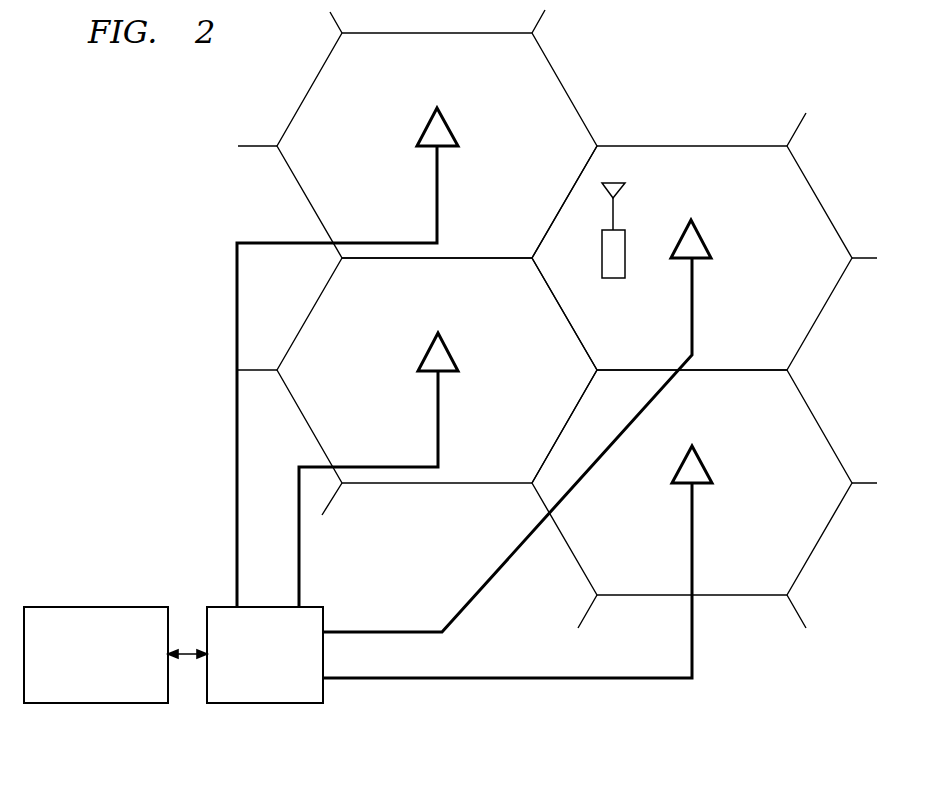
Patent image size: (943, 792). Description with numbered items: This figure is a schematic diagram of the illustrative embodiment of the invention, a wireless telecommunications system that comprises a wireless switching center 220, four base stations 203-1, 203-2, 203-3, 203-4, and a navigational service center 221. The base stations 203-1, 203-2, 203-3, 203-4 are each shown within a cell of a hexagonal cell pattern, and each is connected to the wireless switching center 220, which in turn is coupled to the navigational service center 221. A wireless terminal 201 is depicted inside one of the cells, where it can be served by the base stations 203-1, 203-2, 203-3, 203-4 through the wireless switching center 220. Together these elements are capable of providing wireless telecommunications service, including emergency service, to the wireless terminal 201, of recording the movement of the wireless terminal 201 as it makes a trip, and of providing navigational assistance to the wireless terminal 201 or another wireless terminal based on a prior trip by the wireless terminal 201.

The wireless terminal 201 is at (613, 278).
The base station 203-1 is at (437, 182).
The base station 203-2 is at (439, 403).
The base station 203-3 is at (693, 293).
The base station 203-4 is at (693, 518).
The wireless switching center 220 is at (274, 704).
The navigational service center 221 is at (128, 704).